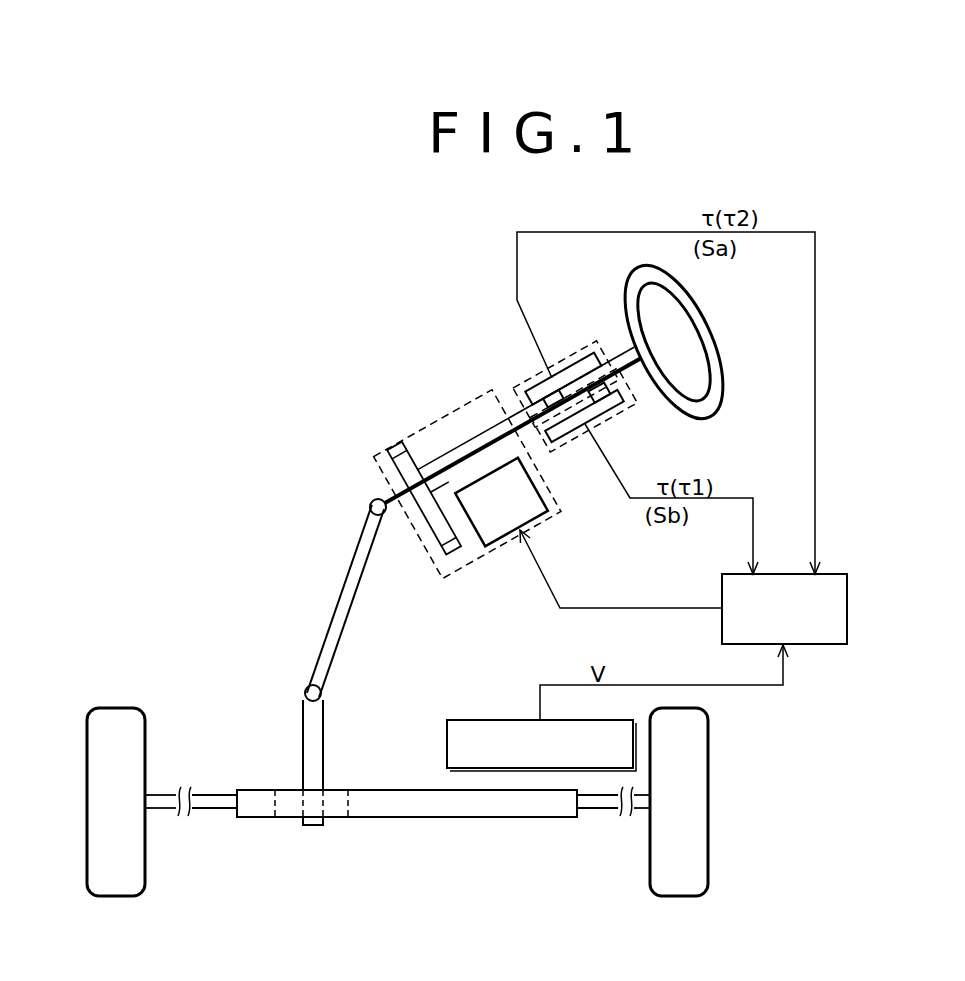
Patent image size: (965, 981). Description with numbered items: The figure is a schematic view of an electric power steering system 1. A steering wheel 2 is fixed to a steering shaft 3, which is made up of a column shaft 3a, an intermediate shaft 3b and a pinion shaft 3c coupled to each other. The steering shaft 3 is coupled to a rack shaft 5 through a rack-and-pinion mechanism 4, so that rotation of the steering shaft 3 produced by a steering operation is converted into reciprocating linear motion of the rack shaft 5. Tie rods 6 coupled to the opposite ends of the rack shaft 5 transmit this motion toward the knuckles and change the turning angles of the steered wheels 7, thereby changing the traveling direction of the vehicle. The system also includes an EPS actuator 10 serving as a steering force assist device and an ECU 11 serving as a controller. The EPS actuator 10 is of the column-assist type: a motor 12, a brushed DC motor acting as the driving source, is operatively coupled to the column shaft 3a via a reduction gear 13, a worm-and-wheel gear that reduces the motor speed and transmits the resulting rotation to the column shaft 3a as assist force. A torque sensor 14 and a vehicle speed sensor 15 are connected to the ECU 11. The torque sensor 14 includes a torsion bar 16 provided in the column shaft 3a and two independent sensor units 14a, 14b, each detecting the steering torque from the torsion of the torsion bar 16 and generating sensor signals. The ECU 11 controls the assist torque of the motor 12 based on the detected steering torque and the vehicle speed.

The electric power steering system 1 is at (892, 220).
The steering wheel 2 is at (685, 291).
The steering shaft 3 is at (320, 648).
The column shaft 3a is at (375, 498).
The intermediate shaft 3b is at (343, 586).
The pinion shaft 3c is at (289, 747).
The rack-and-pinion mechanism 4 is at (338, 790).
The rack shaft 5 is at (399, 790).
The tie rod 6 is at (208, 817).
The steered wheel 7 is at (147, 737).
The EPS actuator 10 is at (468, 403).
The ECU 11 is at (847, 595).
The motor 12 is at (488, 513).
The reduction gear 13 is at (417, 527).
The torque sensor 14 is at (633, 398).
The sensor unit 14a is at (617, 413).
The sensor unit 14b is at (573, 354).
The vehicle speed sensor 15 is at (502, 720).
The torsion bar 16 is at (550, 392).